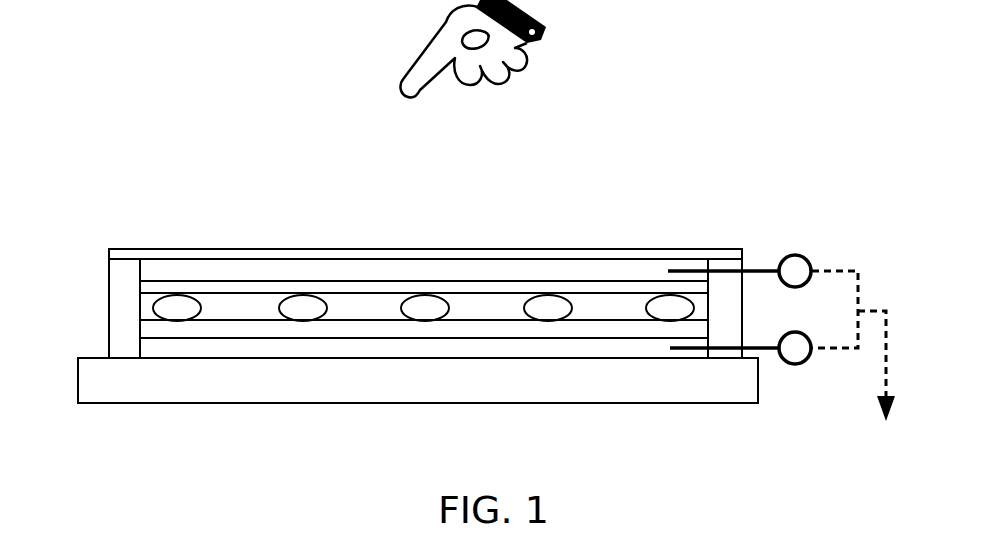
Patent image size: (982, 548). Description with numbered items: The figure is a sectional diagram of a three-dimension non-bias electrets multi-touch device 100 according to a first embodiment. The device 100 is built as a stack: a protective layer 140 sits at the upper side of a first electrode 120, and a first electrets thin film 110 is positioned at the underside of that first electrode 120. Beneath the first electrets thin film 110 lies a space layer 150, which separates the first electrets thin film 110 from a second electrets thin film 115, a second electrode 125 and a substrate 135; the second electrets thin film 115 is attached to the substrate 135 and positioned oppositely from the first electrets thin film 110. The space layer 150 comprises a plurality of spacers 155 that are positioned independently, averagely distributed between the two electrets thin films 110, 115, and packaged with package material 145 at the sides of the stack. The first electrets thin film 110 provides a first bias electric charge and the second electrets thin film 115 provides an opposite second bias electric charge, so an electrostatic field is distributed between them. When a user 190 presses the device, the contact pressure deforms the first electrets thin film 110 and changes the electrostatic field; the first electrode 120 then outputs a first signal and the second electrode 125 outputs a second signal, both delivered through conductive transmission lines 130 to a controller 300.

The 3-dimension non-bias electrets multi-touch device 100 is at (425, 216).
The first electrets thin film 110 is at (210, 290).
The second electrets thin film 115 is at (240, 332).
The first electrode 120 is at (352, 267).
The second electrode 125 is at (472, 353).
The conductive transmission lines 130 is at (752, 271).
The substrate 135 is at (720, 378).
The protective layer 140 is at (600, 250).
The package material 145 is at (125, 282).
The space layer 150 is at (135, 303).
The spacers 155 is at (180, 313).
The user 190 is at (500, 48).
The controller 300 is at (905, 444).